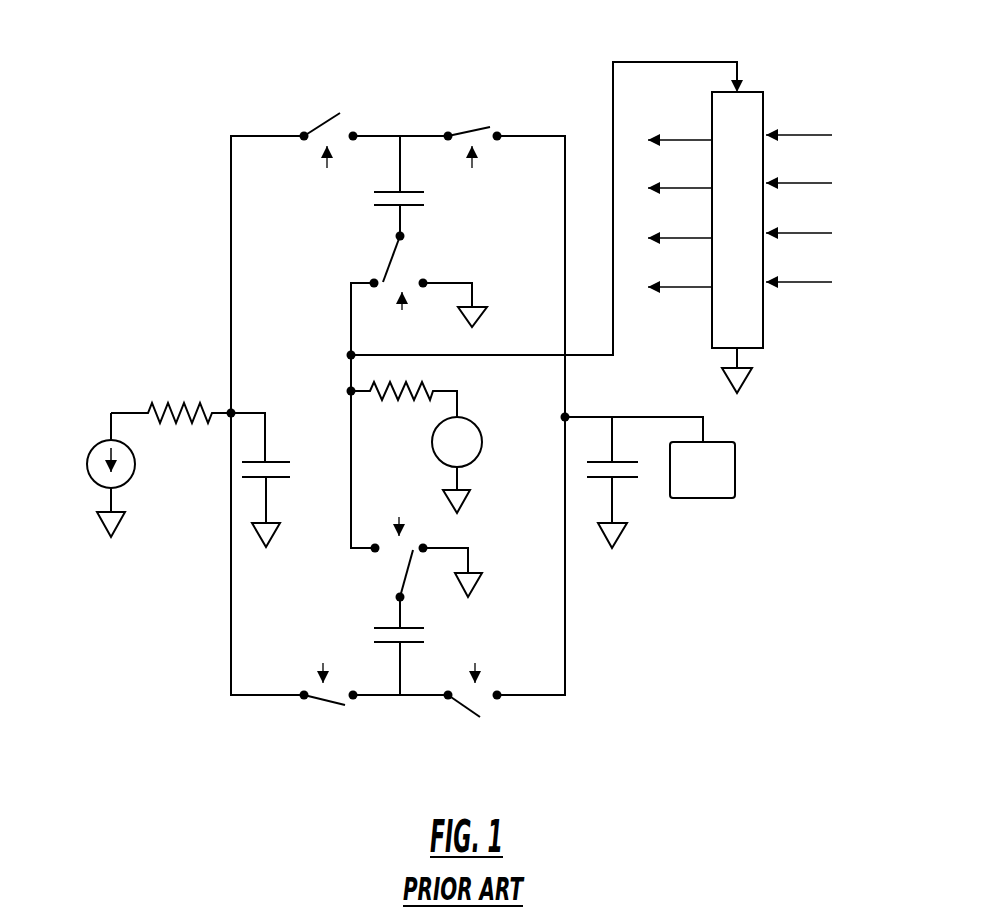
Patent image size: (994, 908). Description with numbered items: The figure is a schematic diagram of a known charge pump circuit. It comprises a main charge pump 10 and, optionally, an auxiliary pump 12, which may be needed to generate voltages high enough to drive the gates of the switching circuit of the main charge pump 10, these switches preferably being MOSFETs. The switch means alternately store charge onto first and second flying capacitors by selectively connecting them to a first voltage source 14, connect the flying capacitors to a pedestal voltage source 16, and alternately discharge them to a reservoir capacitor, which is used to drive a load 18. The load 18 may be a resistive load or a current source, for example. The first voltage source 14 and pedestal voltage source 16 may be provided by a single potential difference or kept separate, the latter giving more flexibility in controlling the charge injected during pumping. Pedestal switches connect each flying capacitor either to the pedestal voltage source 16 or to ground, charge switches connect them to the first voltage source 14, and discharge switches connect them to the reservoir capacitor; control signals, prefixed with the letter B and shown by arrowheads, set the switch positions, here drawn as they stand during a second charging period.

The main charge pump 10 is at (180, 115).
The auxiliary pump 12 is at (752, 90).
The first voltage source 14 is at (88, 463).
The pedestal voltage source 16 is at (477, 455).
The load 18 is at (712, 498).